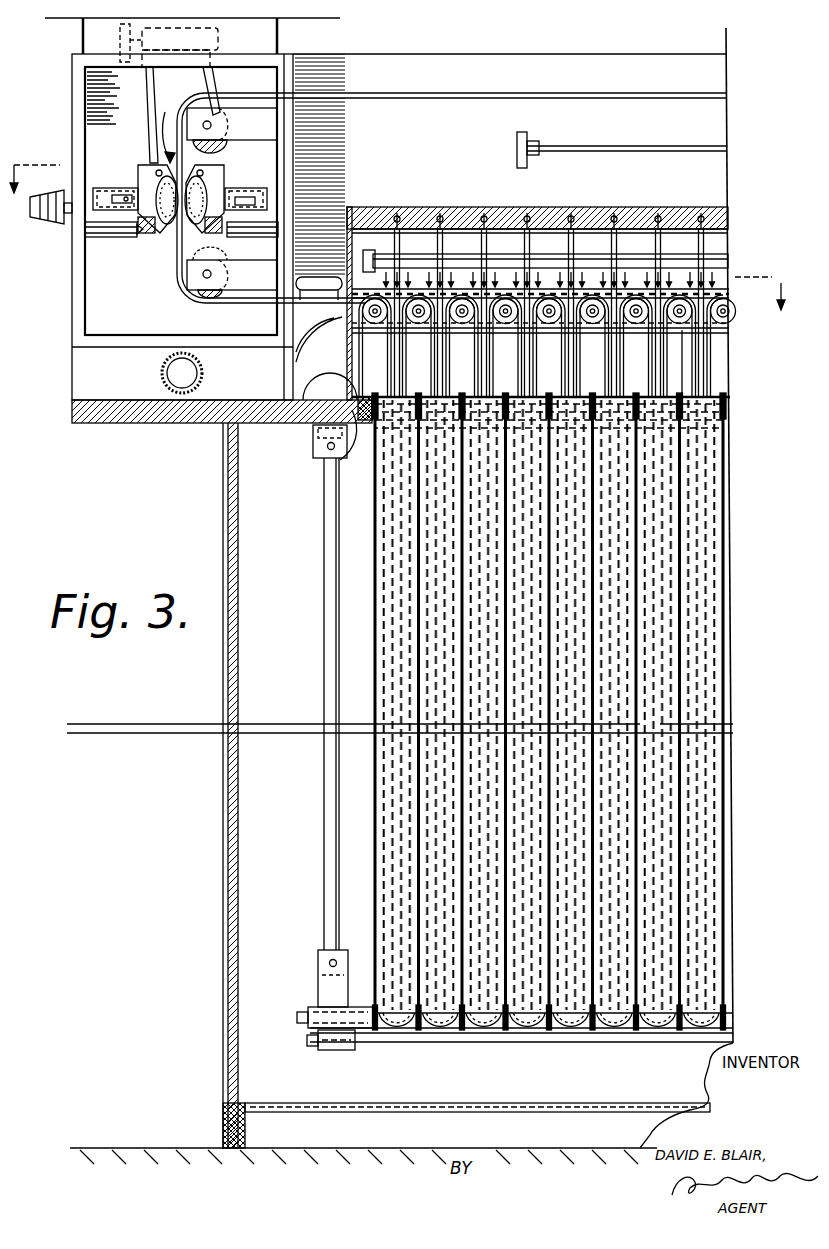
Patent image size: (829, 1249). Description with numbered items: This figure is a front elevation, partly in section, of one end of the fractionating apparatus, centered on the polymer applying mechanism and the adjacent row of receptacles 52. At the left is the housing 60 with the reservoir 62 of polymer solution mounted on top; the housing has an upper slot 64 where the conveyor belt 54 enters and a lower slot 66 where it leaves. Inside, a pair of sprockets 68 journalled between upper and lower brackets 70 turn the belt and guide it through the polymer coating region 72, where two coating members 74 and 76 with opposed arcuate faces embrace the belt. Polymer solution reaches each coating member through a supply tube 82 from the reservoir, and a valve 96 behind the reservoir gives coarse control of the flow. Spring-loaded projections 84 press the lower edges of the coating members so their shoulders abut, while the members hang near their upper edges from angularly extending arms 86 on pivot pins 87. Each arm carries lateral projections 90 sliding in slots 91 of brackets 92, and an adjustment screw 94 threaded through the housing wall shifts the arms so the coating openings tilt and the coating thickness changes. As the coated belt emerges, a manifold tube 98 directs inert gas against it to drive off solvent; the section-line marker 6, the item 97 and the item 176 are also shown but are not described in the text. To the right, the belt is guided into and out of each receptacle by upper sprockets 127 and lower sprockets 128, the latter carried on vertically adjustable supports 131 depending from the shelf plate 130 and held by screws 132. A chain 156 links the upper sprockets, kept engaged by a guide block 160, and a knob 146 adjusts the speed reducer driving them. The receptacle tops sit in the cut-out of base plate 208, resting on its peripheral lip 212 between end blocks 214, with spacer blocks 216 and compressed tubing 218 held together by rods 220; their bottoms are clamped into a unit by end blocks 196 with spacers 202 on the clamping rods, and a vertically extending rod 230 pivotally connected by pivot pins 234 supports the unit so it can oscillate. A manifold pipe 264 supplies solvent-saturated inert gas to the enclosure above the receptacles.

The section line 6 is at (398, 223).
The receptacle 52 is at (372, 790).
The conveyor belt 54 is at (483, 80).
The housing 60 is at (72, 329).
The reservoir 62 is at (83, 43).
The upper slot 64 is at (300, 88).
The lower slot 66 is at (275, 307).
The sprocket 68 is at (226, 148).
The bracket 70 is at (262, 126).
The polymer coating region 72 is at (166, 124).
The coating member 74 is at (153, 230).
The coating member 76 is at (200, 222).
The supply tube 82 is at (204, 82).
The spring-loaded projection 84 is at (128, 237).
The arm 86 is at (188, 220).
The pivot pin 87 is at (142, 168).
The lateral projection 90 is at (130, 190).
The slot 91 is at (271, 210).
The bracket 92 is at (95, 192).
The adjustment screw 94 is at (36, 224).
The valve 96 is at (148, 40).
The stop tip 97 is at (86, 229).
The manifold tube 98 is at (340, 322).
The upper sprocket 127 is at (737, 318).
The lower sprocket 128 is at (635, 1022).
The shelf plate 130 is at (728, 207).
The support 131 is at (700, 343).
The screw 132 is at (732, 215).
The knob 146 is at (162, 374).
The chain 156 is at (685, 330).
The guide block 160 is at (722, 240).
The actuating rod 176 is at (636, 140).
The end block 196 is at (345, 1050).
The spacer 202 is at (735, 1013).
The base plate 208 is at (120, 431).
The peripheral lip 212 is at (347, 458).
The end block 214 is at (313, 436).
The spacer block 216 is at (692, 413).
The compressed tubing 218 is at (690, 430).
The rod 220 is at (734, 399).
The vertically extending rod 230 is at (324, 882).
The pivot pin 234 is at (318, 965).
The manifold pipe 264 is at (541, 258).